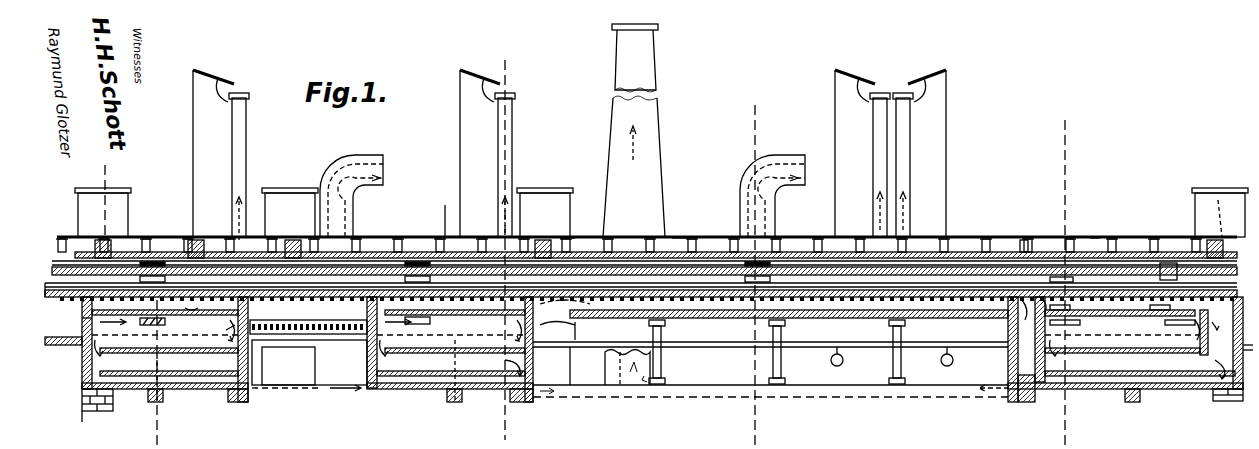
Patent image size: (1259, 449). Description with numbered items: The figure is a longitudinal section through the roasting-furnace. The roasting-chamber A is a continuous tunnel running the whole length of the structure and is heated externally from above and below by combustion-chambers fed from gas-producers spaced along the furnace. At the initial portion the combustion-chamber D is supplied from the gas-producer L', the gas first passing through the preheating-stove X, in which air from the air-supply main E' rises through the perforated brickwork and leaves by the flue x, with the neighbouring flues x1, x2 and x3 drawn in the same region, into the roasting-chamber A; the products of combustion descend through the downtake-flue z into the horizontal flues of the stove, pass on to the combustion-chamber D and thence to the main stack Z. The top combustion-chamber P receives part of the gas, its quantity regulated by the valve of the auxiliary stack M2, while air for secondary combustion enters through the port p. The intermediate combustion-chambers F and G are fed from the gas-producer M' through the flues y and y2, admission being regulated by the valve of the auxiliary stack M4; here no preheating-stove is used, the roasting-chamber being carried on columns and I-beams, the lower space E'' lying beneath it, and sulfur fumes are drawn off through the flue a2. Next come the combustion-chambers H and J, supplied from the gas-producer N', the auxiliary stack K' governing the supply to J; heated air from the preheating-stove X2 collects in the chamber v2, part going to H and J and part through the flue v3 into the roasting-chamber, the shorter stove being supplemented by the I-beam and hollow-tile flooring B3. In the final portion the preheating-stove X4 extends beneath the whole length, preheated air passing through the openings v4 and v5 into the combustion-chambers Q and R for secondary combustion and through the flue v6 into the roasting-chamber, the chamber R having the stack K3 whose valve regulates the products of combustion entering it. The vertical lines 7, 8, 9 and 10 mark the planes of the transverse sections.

The section line 10 is at (143, 297).
The section line 9 is at (503, 245).
The section line 8 is at (758, 277).
The section line 7 is at (1073, 273).
The opening or passage v5 is at (122, 212).
The combustion-chamber R is at (195, 246).
The stack K3 is at (236, 160).
The gas-producer N' is at (309, 286).
The combustion-chamber J is at (372, 210).
The flue a2 is at (350, 212).
The combustion-chamber H is at (415, 224).
The auxiliary stack K' is at (497, 155).
The gas-producer M' is at (545, 286).
The flue y2 is at (560, 236).
The main stack Z is at (634, 204).
The combustion-chamber G is at (680, 236).
The auxiliary stack M4 is at (870, 150).
The auxiliary stack M2 is at (905, 175).
The top combustion-chamber P is at (1022, 240).
The combustion-chamber D is at (1088, 220).
The gas-producer L' is at (1220, 196).
The port or passage p is at (1222, 218).
The air-supply main E' is at (57, 329).
The preheating-stove X4 is at (200, 372).
The opening or passage v4 is at (82, 318).
The combustion-chamber Q is at (191, 303).
The flue v6 is at (165, 324).
The flue or chamber v3 is at (380, 338).
The I-beam and hollow-tile flooring B3 is at (320, 345).
The preheating-stove X2 is at (428, 362).
The chamber v2 is at (435, 321).
The flue y is at (557, 332).
The roasting-chamber A is at (540, 303).
The combustion-chamber F is at (748, 306).
The lower chamber E'' is at (770, 358).
The preheating-stove X is at (1162, 378).
The flue x1 is at (1076, 286).
The flue opening x2 is at (1152, 286).
The flue x is at (1060, 326).
The flue x3 is at (1165, 326).
The downtake-flue z is at (1219, 327).